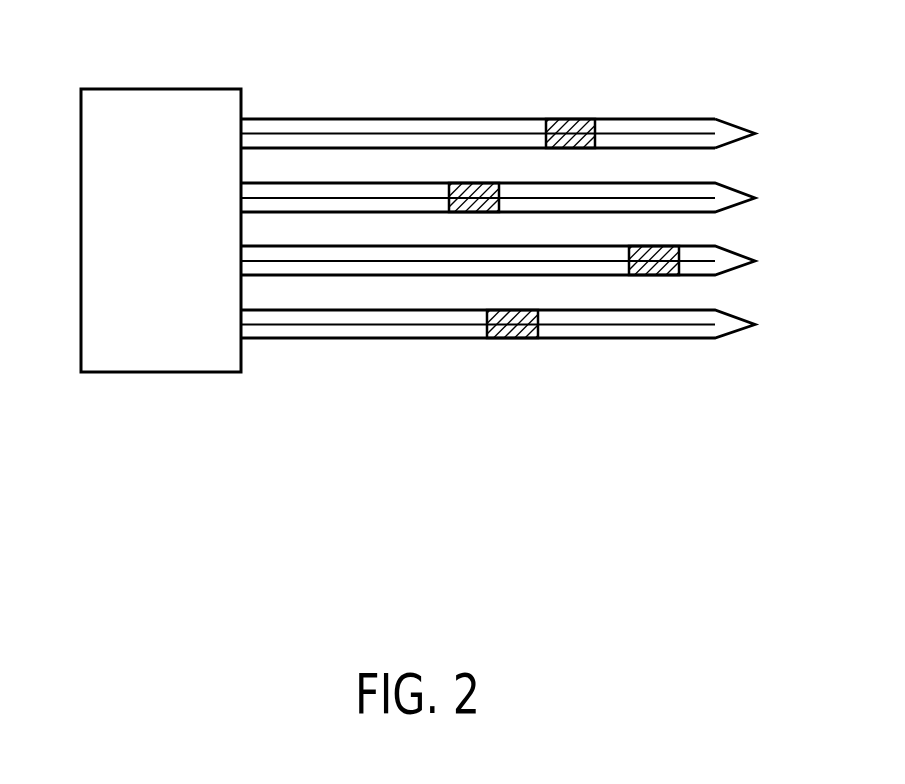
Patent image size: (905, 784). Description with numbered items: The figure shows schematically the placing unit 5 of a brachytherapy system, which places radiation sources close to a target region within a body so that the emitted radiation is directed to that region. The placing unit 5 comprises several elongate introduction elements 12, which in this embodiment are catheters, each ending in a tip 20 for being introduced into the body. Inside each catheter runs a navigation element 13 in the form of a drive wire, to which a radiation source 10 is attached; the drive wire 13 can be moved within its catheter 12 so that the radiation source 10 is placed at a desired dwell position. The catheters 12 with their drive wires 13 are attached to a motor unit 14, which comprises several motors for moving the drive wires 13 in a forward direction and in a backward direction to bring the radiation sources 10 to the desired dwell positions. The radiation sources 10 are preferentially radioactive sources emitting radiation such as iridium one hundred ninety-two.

The placing unit 5 is at (280, 462).
The radiation source 10 is at (574, 118).
The elongate introduction element 12 is at (410, 118).
The navigation element 13 is at (485, 128).
The motor unit 14 is at (162, 372).
The tip 20 is at (726, 100).